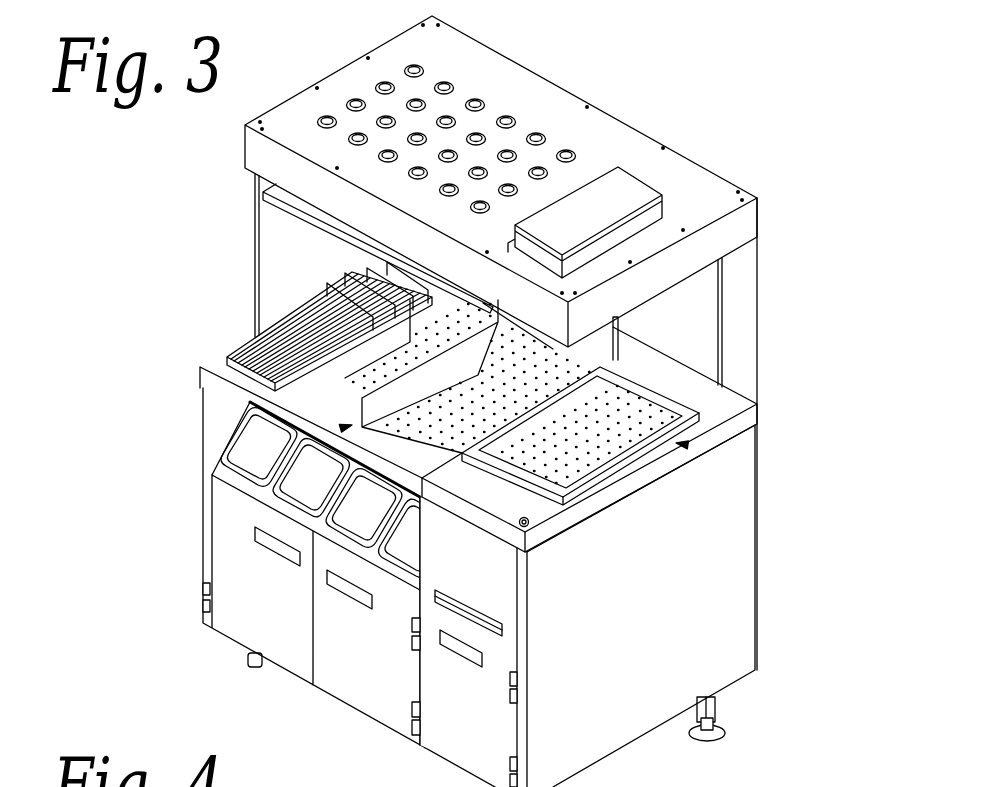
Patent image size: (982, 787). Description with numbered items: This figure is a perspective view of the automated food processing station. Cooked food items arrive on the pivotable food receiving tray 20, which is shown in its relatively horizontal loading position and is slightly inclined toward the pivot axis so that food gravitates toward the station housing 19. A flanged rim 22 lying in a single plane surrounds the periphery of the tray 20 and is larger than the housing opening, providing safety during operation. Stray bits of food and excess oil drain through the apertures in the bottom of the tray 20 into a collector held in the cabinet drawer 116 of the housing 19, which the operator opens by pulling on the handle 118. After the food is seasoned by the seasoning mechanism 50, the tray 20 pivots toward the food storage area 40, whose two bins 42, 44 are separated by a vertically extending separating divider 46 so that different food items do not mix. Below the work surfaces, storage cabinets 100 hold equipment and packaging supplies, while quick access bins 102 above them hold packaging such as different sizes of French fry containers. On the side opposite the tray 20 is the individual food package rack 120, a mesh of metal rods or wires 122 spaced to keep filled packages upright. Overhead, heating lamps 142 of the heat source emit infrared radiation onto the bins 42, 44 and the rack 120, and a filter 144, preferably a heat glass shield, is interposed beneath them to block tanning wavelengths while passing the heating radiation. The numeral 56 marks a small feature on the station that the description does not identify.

The station housing 19 is at (727, 515).
The food receiving tray 20 is at (655, 438).
The flanged rim 22 is at (560, 507).
The food storage area 40 is at (352, 425).
The bin 42 is at (355, 513).
The bin 44 is at (402, 400).
The separating divider 46 is at (258, 428).
The seasoning mechanism 50 is at (620, 213).
The fastener 56 is at (528, 527).
The storage cabinets 100 is at (240, 622).
The quick access bins 102 is at (260, 473).
The cabinet drawer 116 is at (503, 605).
The handle 118 is at (470, 603).
The individual food package rack 120 is at (250, 350).
The metal rods or wires 122 is at (327, 288).
The heating lamps 142 is at (327, 115).
The filter 144 is at (312, 218).